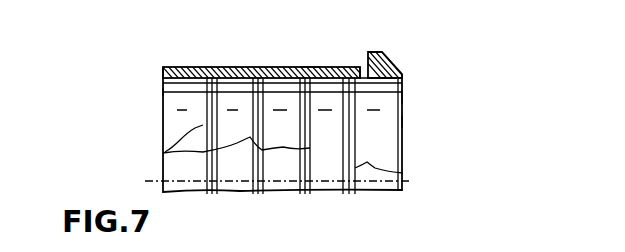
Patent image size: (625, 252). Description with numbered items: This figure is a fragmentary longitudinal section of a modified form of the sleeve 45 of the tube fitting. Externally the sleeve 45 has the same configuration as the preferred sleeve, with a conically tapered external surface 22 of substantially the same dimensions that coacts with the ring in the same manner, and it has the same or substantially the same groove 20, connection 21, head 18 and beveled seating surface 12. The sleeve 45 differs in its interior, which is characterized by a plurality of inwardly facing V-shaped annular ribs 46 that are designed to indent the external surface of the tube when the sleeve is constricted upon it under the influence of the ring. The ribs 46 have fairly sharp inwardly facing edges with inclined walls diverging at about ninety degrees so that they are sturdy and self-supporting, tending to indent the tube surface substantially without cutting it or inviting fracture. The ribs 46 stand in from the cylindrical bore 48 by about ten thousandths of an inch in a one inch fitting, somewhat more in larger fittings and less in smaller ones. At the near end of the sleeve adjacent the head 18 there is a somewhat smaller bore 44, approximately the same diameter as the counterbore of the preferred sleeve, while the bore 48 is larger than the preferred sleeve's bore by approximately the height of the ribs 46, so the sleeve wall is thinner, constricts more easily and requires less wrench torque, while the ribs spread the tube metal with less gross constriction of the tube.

The beveled seating surface 12 is at (402, 67).
The head 18 is at (382, 52).
The groove 20 is at (363, 75).
The connection 21 is at (402, 122).
The conically tapered external surface 22 is at (242, 67).
The smaller bore 44 is at (402, 97).
The sleeve 45 is at (310, 67).
The inwardly facing V-shaped annular ribs 46 is at (163, 153).
The cylindrical bore 48 is at (165, 92).